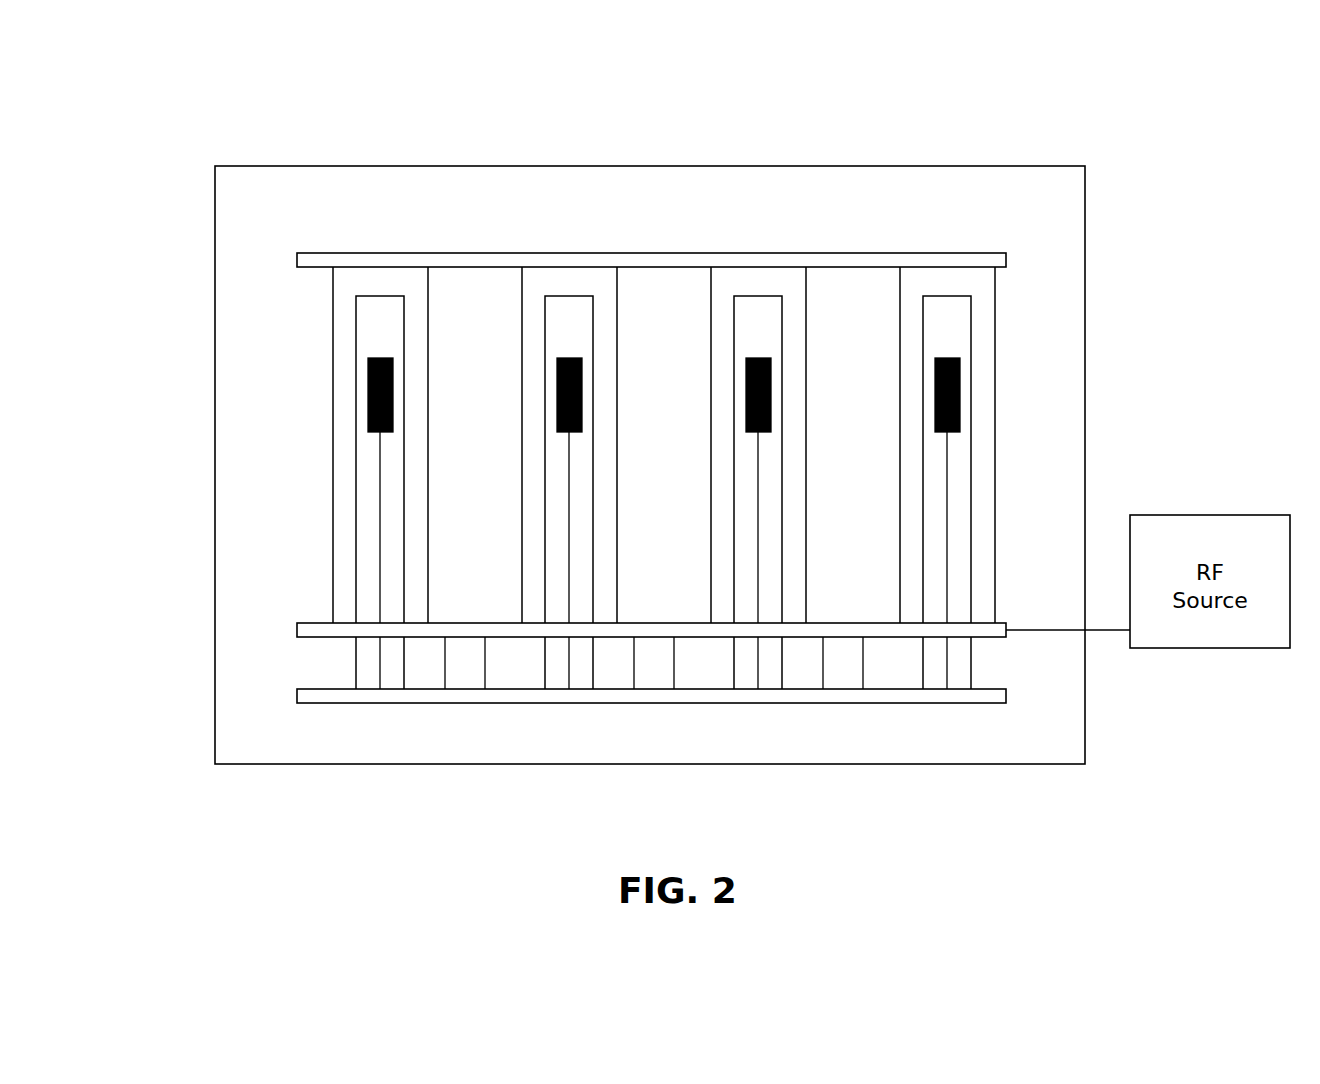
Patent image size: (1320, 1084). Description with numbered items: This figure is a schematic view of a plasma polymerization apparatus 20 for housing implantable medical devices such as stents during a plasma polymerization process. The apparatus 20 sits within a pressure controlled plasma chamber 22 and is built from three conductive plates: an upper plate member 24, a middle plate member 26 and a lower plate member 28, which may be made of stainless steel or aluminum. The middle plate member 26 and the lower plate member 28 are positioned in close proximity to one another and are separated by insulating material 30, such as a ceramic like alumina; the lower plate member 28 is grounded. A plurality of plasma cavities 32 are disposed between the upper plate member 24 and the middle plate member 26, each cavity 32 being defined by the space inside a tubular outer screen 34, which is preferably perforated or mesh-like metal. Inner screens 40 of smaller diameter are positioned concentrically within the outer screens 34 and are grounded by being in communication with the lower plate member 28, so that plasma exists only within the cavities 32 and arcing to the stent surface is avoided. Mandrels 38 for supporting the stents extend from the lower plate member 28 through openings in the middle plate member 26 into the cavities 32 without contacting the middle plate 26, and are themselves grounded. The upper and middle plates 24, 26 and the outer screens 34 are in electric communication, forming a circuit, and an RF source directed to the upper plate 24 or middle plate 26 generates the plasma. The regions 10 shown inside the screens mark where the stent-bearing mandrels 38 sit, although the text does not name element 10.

The plasma / gas discharge region 10 is at (391, 418).
The plasma polymerization apparatus 20 is at (262, 272).
The plasma chamber 22 is at (1086, 215).
The upper plate member 24 is at (1007, 254).
The middle plate member 26 is at (297, 628).
The lower plate member 28 is at (1007, 694).
The insulating material 30 is at (465, 662).
The plasma cavities 32 is at (380, 245).
The outer screens 34 is at (333, 288).
The mandrels 38 is at (380, 526).
The inner screens 40 is at (356, 339).